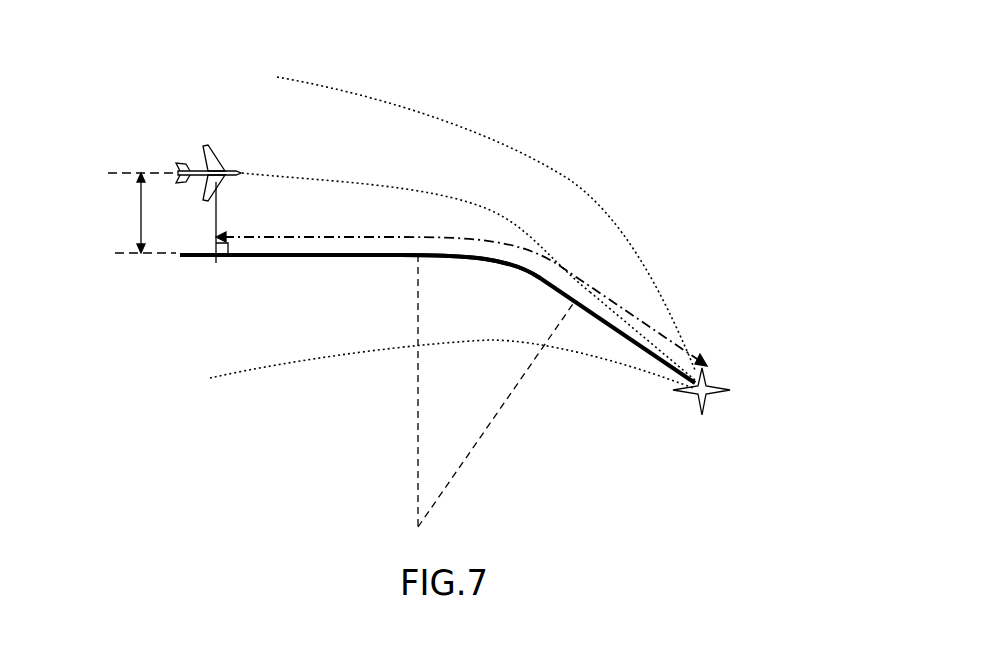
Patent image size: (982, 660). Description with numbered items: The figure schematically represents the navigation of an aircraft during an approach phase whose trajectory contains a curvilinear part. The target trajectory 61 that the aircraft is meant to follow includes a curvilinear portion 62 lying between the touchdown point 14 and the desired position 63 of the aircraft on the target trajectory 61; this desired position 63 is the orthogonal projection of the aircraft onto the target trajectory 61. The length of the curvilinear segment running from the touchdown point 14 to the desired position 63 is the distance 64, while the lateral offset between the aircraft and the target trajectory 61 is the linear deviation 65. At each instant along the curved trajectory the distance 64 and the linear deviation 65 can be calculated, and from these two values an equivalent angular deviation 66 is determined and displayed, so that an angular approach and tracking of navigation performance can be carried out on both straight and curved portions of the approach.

The touchdown point 14 is at (710, 398).
The target trajectory 61 is at (198, 260).
The curvilinear portion 62 is at (500, 265).
The desired position 63 is at (217, 262).
The length of the curvilinear segment 64 is at (349, 236).
The linear deviation 65 is at (141, 206).
The equivalent angular deviation 66 is at (602, 300).